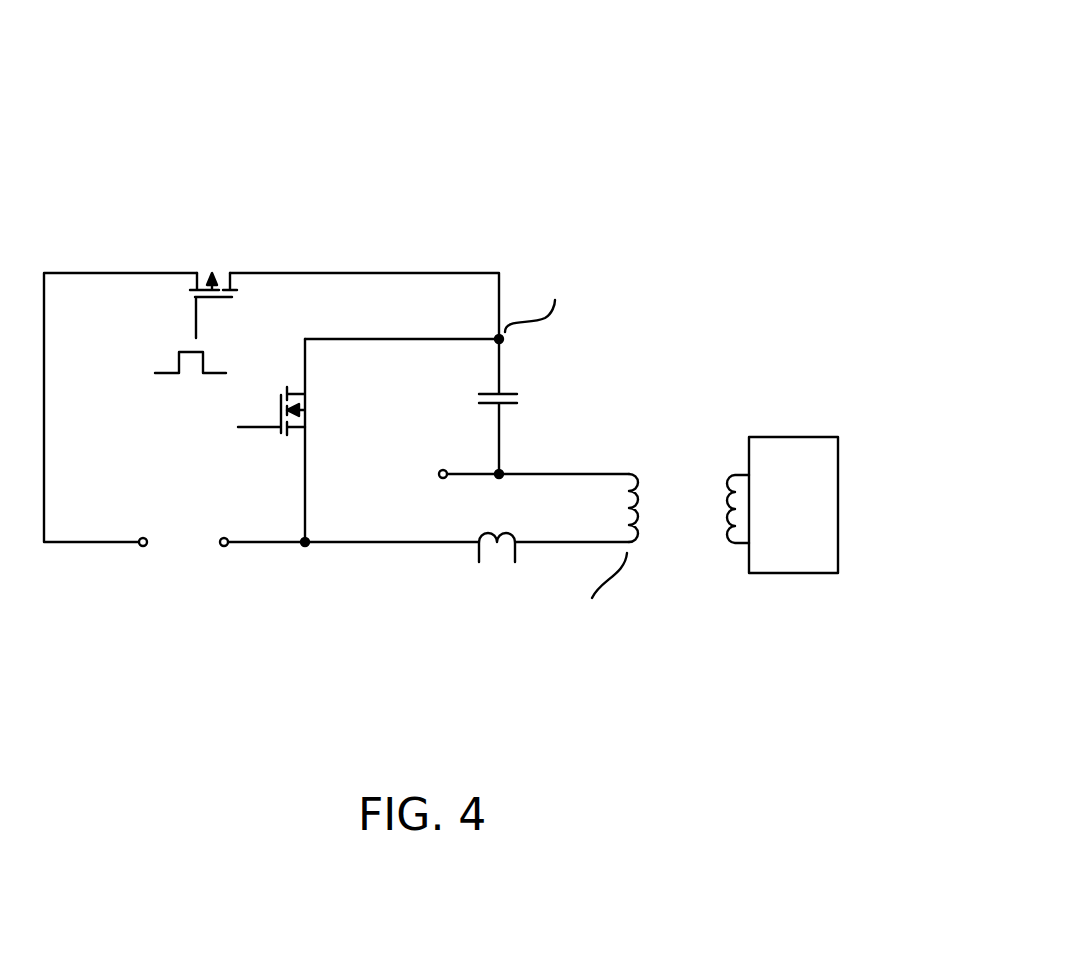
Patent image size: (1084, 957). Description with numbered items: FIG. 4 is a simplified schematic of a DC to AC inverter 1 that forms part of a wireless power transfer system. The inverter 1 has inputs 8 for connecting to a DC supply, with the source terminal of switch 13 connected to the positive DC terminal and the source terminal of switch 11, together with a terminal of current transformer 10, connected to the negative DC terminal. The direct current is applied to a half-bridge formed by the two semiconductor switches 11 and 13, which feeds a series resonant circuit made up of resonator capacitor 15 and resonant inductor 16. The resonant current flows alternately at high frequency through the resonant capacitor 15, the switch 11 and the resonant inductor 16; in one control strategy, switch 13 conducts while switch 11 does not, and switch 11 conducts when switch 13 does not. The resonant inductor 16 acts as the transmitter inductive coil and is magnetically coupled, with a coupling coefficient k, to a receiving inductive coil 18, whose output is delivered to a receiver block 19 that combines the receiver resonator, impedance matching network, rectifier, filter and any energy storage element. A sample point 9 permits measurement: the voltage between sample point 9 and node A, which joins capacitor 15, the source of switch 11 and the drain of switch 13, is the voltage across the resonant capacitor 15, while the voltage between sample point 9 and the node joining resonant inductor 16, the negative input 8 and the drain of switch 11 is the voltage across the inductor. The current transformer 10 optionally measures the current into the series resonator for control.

The inverter 1 is at (415, 103).
The inputs 8 is at (222, 532).
The sample point 9 is at (440, 457).
The current transformer 10 is at (505, 578).
The switch 11 is at (285, 375).
The switch 13 is at (185, 289).
The resonator capacitor 15 is at (513, 378).
The resonant inductor 16 is at (630, 467).
The receiving inductive coil 18 is at (737, 467).
The receiver block 19 is at (810, 507).